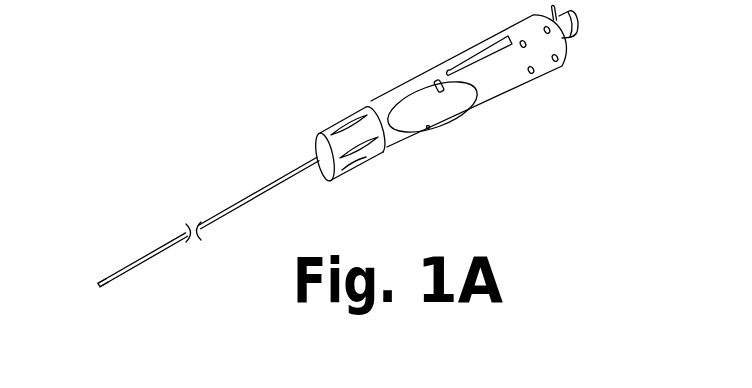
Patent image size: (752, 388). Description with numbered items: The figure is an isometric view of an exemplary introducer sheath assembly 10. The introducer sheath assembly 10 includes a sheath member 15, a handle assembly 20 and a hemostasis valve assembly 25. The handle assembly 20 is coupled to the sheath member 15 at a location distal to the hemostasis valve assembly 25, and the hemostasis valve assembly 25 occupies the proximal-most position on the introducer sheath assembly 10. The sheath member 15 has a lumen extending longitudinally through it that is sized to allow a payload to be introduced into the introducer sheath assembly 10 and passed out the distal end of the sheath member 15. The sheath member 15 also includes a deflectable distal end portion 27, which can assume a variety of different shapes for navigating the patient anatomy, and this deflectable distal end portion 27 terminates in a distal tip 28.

The introducer sheath assembly 10 is at (291, 100).
The sheath member 15 is at (255, 193).
The handle assembly 20 is at (430, 70).
The hemostasis valve assembly 25 is at (573, 36).
The deflectable distal end portion 27 is at (145, 264).
The distal tip 28 is at (97, 284).